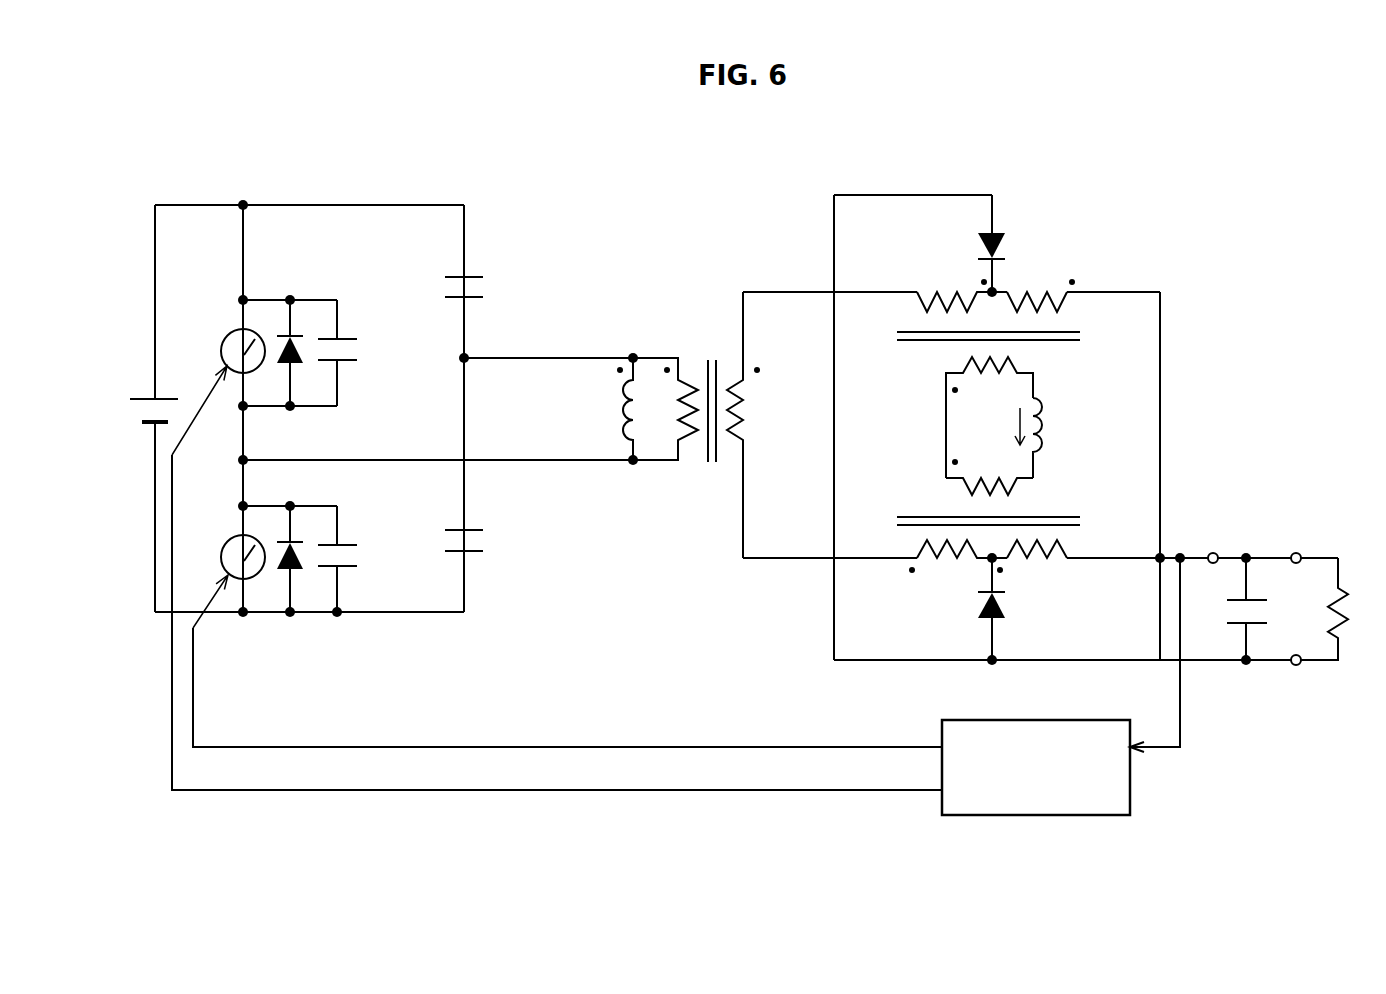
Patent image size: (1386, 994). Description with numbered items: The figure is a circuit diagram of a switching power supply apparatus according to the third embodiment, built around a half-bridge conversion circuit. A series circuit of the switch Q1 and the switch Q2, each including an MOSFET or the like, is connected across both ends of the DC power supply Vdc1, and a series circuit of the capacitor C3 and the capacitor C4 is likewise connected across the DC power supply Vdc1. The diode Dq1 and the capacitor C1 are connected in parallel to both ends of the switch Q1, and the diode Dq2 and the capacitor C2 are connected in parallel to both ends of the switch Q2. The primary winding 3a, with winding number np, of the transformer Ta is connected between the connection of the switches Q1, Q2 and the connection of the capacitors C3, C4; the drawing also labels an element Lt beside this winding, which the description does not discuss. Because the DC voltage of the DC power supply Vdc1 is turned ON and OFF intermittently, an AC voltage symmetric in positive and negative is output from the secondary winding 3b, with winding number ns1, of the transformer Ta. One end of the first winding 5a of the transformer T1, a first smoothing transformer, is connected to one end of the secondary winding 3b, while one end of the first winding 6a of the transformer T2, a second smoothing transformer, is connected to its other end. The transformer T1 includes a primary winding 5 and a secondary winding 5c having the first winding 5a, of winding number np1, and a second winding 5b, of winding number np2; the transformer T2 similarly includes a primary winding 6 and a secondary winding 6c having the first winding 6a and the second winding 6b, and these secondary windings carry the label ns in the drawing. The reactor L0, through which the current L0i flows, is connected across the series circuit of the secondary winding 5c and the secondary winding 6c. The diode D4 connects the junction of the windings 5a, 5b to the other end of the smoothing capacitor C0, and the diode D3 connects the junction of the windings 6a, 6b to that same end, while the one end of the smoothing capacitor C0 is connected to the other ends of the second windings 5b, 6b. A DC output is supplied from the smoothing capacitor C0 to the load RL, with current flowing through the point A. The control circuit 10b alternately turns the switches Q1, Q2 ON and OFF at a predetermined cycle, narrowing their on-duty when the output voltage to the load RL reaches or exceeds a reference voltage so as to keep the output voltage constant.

The DC power supply Vdc1 is at (130, 394).
The switch Q1 is at (218, 377).
The switch Q2 is at (226, 567).
The diode Dq1 is at (290, 336).
The diode Dq2 is at (292, 542).
The capacitor C1 is at (348, 353).
The capacitor C2 is at (348, 559).
The capacitor C3 is at (482, 288).
The capacitor C4 is at (482, 542).
The inductance Lt is at (606, 409).
The winding number of primary winding np is at (665, 409).
The primary winding 3a is at (665, 373).
The transformer Ta is at (712, 393).
The winding number of secondary winding ns1 is at (710, 497).
The secondary winding 3b is at (745, 425).
The primary winding 5 is at (1004, 336).
The transformer T1 is at (972, 335).
The first winding 5a is at (957, 259).
The second winding 5b is at (1047, 254).
The secondary winding 5c is at (963, 417).
The winding number of first winding np1 is at (963, 285).
The winding number of second winding np2 is at (1041, 285).
The secondary winding ns is at (989, 417).
The diode D4 is at (1009, 246).
The reactor L0 is at (1059, 435).
The reactor current L0i is at (1002, 426).
The primary winding 6 is at (1004, 553).
The transformer T2 is at (972, 520).
The first winding 6a is at (895, 618).
The second winding 6b is at (1093, 618).
The secondary winding 6c is at (1050, 498).
The diode D3 is at (1013, 609).
The point A is at (1224, 542).
The smoothing capacitor C0 is at (1231, 609).
The load RL is at (1273, 609).
The control circuit 10b is at (1100, 815).